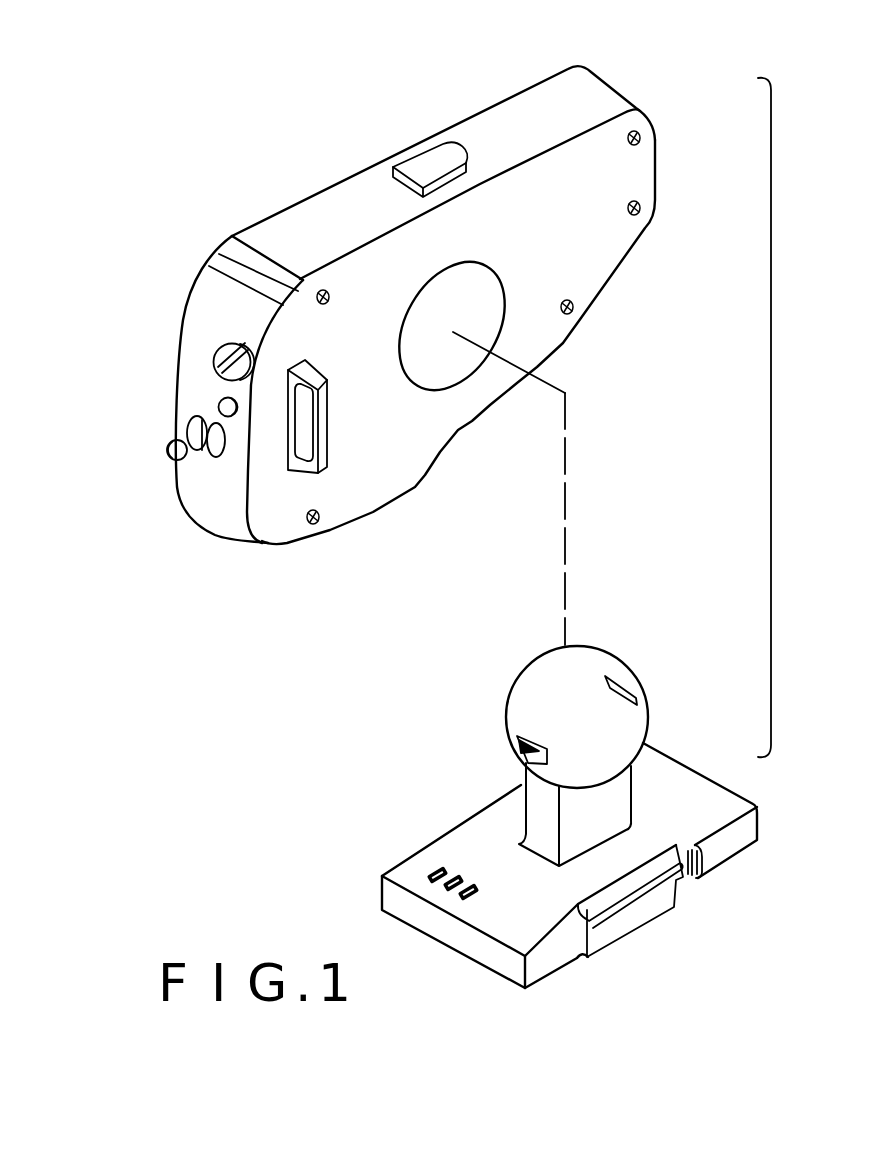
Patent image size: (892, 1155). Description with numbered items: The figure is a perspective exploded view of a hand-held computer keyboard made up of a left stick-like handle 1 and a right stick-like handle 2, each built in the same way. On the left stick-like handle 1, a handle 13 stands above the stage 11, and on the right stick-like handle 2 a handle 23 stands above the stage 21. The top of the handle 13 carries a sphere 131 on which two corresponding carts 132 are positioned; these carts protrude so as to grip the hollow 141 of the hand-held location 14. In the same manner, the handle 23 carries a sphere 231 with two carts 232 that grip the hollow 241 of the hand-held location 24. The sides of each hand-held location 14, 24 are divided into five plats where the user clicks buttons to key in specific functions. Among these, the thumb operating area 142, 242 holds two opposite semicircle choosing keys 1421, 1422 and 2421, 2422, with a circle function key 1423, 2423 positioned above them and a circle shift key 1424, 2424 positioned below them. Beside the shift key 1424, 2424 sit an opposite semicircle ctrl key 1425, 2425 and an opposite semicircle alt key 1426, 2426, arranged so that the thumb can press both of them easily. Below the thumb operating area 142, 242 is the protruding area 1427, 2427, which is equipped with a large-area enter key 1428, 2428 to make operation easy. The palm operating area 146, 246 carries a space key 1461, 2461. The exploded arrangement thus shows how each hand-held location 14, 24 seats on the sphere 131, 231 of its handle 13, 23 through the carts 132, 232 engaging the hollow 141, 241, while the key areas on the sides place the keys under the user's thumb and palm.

The left stick-like handle 1 is at (793, 418).
The right stick-like handle 2 is at (793, 418).
The stage 11 is at (560, 865).
The stage 21 is at (473, 830).
The handle 13 is at (633, 756).
The handle 23 is at (612, 796).
The sphere 131 is at (673, 667).
The sphere 231 is at (610, 670).
The carts 132 is at (480, 703).
The carts 232 is at (517, 739).
The hand-held location 14 is at (506, 310).
The hand-held location 24 is at (665, 148).
The hollow 141 is at (542, 444).
The hollow 241 is at (480, 297).
The thumb operating area 142 is at (239, 448).
The thumb operating area 242 is at (228, 513).
The choosing key 1421 is at (127, 411).
The choosing key 2421 is at (197, 432).
The choosing key 1422 is at (155, 508).
The choosing key 2422 is at (213, 450).
The function key 1423 is at (115, 485).
The function key 2423 is at (170, 455).
The shift key 1424 is at (152, 361).
The shift key 2424 is at (220, 402).
The ctrl key 1425 is at (177, 305).
The ctrl key 2425 is at (215, 353).
The alt key 1426 is at (252, 261).
The alt key 2426 is at (238, 343).
The protruding area 1427 is at (370, 464).
The protruding area 2427 is at (325, 425).
The enter key 1428 is at (322, 503).
The enter key 2428 is at (302, 450).
The palm operating area 146 is at (443, 149).
The palm operating area 246 is at (503, 110).
The space key 1461 is at (414, 128).
The space key 2461 is at (418, 160).